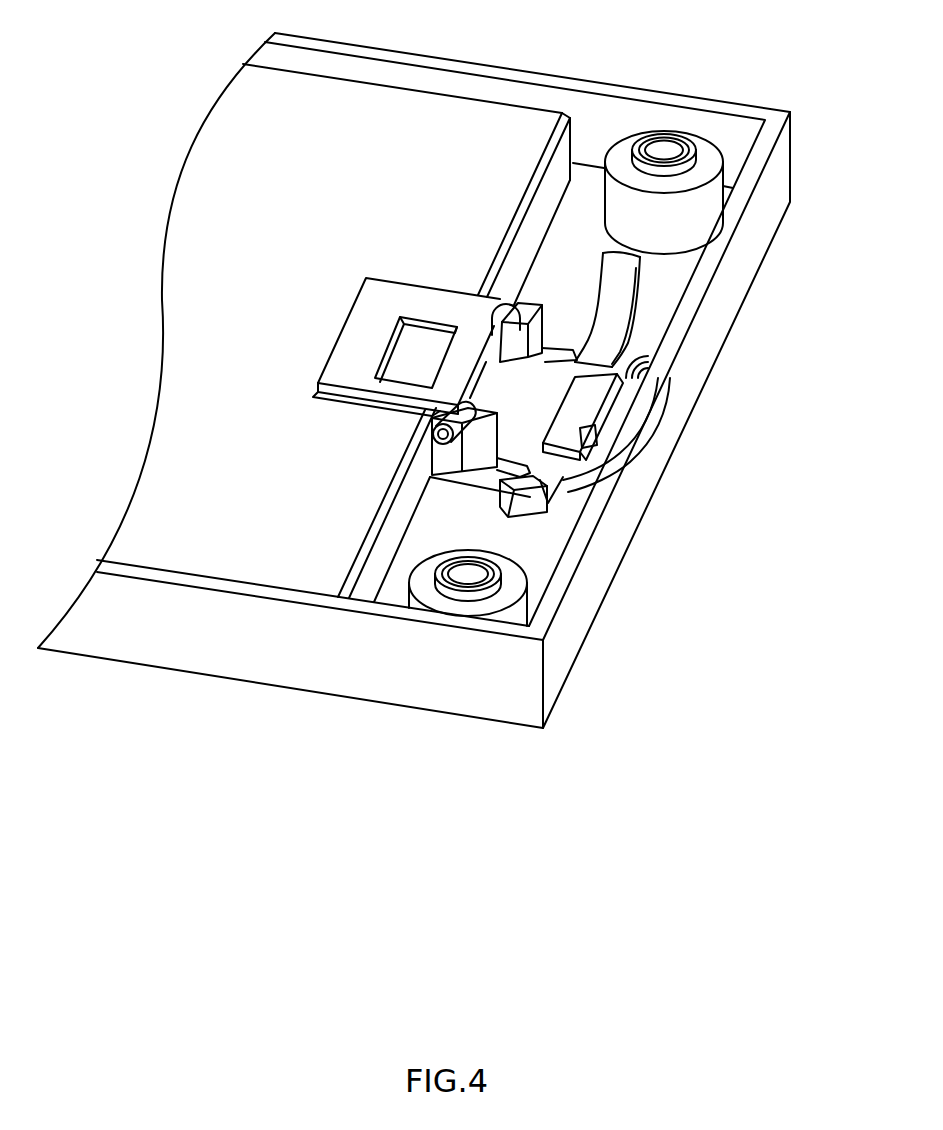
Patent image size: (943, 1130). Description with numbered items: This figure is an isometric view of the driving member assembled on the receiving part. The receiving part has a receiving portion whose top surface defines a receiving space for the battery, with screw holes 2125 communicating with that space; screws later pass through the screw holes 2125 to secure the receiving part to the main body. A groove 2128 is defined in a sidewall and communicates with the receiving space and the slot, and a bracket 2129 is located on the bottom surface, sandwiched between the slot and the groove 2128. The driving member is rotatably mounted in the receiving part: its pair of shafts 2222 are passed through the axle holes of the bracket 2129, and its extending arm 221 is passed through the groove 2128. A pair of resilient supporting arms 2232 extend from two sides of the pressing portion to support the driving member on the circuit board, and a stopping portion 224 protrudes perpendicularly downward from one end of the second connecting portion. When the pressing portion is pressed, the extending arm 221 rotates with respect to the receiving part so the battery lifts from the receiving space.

The screw hole 2125 is at (668, 150).
The bracket 2129 is at (523, 335).
The extending arm 221 is at (378, 332).
The groove 2128 is at (340, 367).
The supporting arm 2232 is at (618, 282).
The stopping portion 224 is at (617, 407).
The shaft 2222 is at (443, 437).